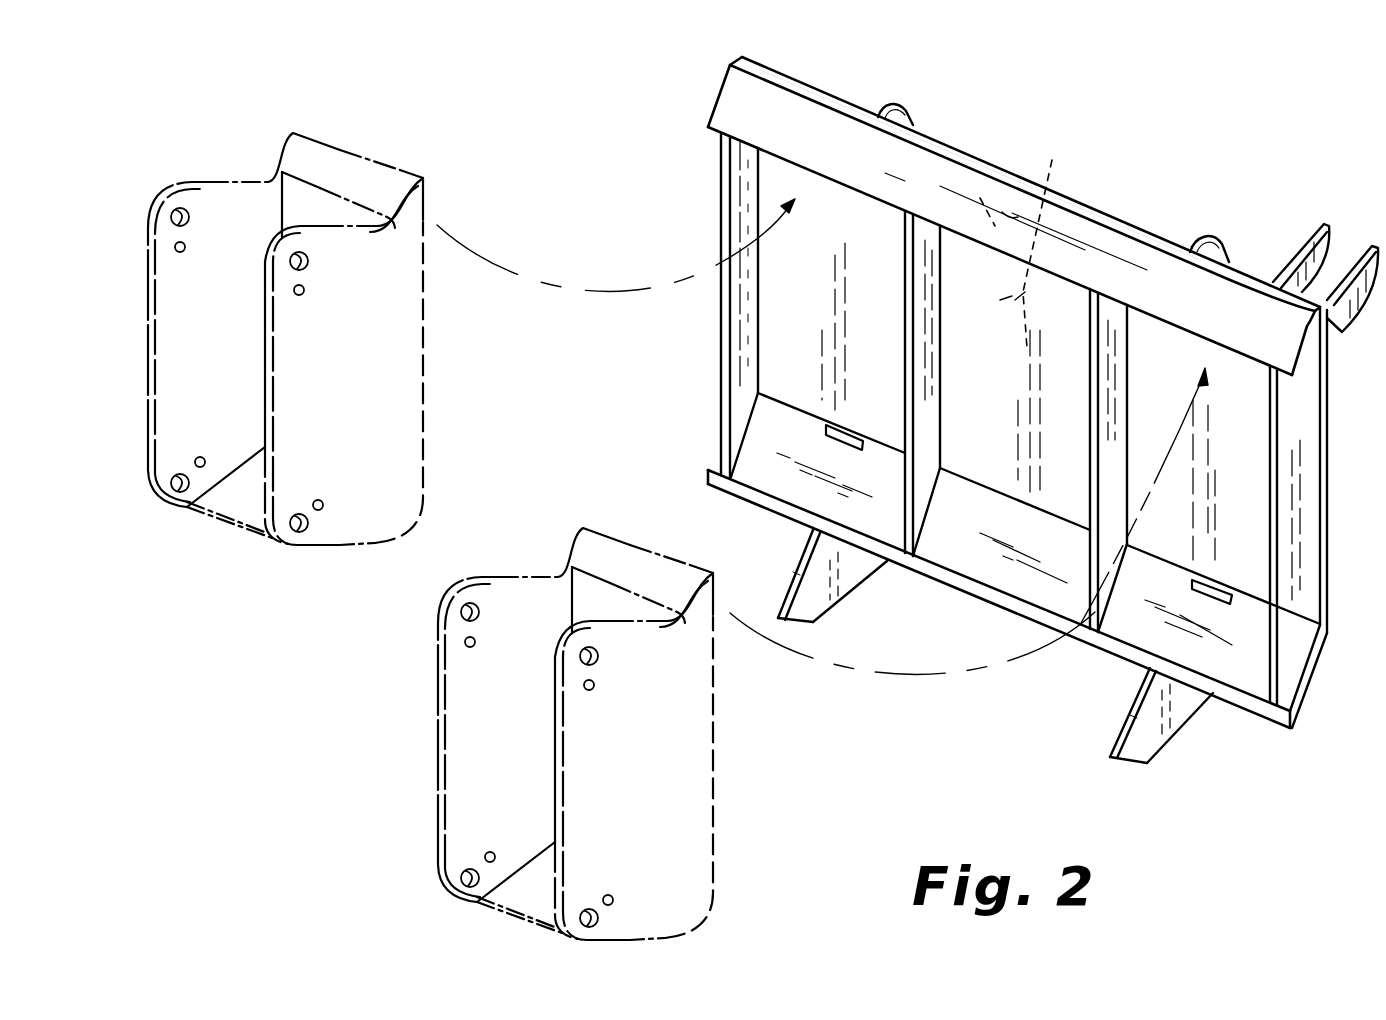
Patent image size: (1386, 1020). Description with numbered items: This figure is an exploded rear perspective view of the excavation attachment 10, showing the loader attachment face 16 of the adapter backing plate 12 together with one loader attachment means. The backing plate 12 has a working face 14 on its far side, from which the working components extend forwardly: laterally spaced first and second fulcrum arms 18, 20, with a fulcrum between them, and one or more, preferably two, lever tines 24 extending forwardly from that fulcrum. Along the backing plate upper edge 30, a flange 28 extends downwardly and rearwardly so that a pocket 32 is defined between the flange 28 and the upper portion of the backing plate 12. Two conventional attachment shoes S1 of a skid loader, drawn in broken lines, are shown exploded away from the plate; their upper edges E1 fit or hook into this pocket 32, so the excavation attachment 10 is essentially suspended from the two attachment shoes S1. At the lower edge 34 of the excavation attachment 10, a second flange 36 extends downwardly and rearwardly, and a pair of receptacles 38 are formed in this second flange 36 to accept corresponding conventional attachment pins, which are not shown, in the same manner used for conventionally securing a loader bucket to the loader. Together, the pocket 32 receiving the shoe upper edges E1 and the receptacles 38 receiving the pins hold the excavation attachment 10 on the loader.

The excavation attachment 10 is at (967, 690).
The adapter backing plate 12 is at (1323, 494).
The working face 14 is at (1055, 192).
The loader attachment face 16 is at (996, 376).
The first fulcrum arm 18 is at (1193, 240).
The second fulcrum arm 20 is at (904, 118).
The lever tines 24 is at (1347, 262).
The flange 28 is at (858, 166).
The backing plate upper edge 30 is at (846, 103).
The pocket 32 is at (966, 247).
The lower edge 34 is at (1040, 494).
The second flange 36 is at (976, 558).
The receptacles 38 is at (851, 431).
The upper edges E1 is at (396, 162).
The attachment shoes S1 is at (507, 567).